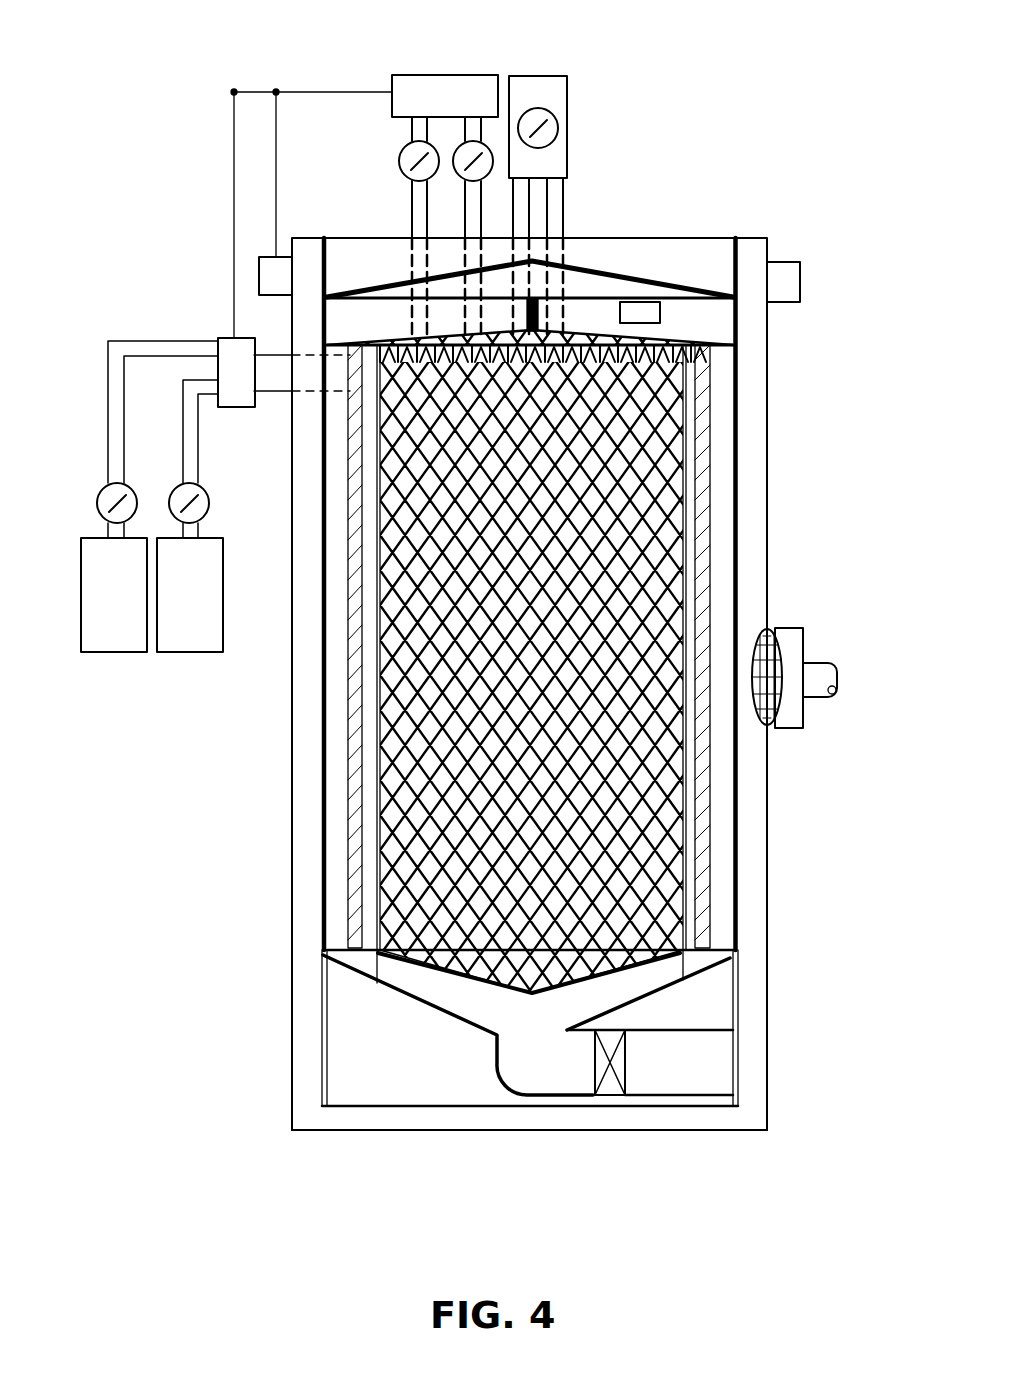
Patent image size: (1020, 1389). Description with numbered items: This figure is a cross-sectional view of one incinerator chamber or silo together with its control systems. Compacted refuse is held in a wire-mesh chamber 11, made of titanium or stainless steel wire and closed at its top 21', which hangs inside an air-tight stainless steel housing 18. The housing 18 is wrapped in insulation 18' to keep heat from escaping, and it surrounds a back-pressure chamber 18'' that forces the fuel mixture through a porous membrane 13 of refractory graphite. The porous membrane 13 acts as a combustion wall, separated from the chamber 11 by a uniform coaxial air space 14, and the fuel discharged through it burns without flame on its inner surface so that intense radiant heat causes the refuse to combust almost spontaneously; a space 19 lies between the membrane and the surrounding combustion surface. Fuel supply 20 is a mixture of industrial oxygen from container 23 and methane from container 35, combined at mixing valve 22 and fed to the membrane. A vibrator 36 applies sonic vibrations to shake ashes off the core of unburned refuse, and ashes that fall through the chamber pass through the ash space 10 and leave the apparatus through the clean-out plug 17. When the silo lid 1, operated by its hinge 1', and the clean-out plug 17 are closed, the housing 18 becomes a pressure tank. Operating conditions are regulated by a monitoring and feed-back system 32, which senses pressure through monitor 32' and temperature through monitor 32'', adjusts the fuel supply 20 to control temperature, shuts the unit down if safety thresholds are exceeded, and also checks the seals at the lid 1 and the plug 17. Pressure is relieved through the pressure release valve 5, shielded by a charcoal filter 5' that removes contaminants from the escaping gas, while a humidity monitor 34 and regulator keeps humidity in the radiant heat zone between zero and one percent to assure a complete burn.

The silo lid 1 is at (530, 220).
The hinge 1' is at (493, 232).
The pressure release valve 5 is at (828, 664).
The filter 5' is at (797, 647).
The ash space 10 is at (357, 835).
The chamber 11 is at (655, 495).
The porous membrane 13 is at (713, 443).
The coaxial air space 14 is at (540, 302).
The clean-out plug 17 is at (627, 1072).
The housing 18 is at (587, 684).
The insulation 18' is at (611, 672).
The back-pressure chamber 18'' is at (600, 943).
The space 19 is at (378, 983).
The fuel supply 20 is at (315, 363).
The top 21' is at (646, 251).
The mixing valve 22 is at (228, 347).
The oxygen container 23 is at (120, 653).
The monitoring and feed-back system 32 is at (364, 169).
The pressure monitor 32' is at (367, 147).
The temperature monitor 32'' is at (404, 114).
The humidity monitor 34 is at (563, 148).
The methane container 35 is at (200, 653).
The vibrator 36 is at (692, 347).